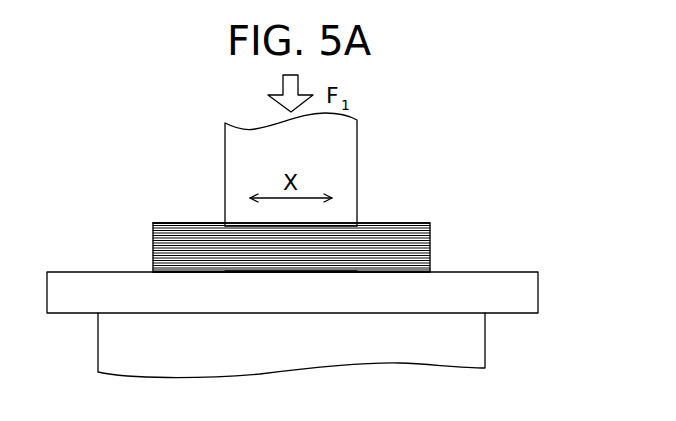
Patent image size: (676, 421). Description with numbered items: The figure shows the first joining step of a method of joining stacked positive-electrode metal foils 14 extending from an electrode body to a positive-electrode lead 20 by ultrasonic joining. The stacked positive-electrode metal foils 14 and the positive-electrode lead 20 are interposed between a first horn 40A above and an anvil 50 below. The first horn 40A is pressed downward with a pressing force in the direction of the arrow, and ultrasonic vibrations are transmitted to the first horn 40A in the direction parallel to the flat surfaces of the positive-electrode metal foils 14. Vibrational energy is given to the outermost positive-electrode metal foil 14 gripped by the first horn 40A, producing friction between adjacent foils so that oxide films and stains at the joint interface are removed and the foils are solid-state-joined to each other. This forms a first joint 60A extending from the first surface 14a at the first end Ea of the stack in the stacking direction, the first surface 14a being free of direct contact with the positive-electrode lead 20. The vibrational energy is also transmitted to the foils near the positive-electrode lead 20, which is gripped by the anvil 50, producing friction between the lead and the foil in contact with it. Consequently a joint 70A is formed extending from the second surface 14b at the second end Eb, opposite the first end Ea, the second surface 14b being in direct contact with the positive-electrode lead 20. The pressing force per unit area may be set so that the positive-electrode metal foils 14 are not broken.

The first horn 40A is at (358, 160).
The positive-electrode metal foils 14 is at (441, 224).
The first surface 14a is at (342, 226).
The second surface 14b is at (328, 272).
The first joint 60A is at (263, 229).
The joint 70A is at (290, 268).
The first end Ea is at (165, 225).
The second end Eb is at (167, 272).
The positive-electrode lead 20 is at (540, 292).
The anvil 50 is at (487, 345).